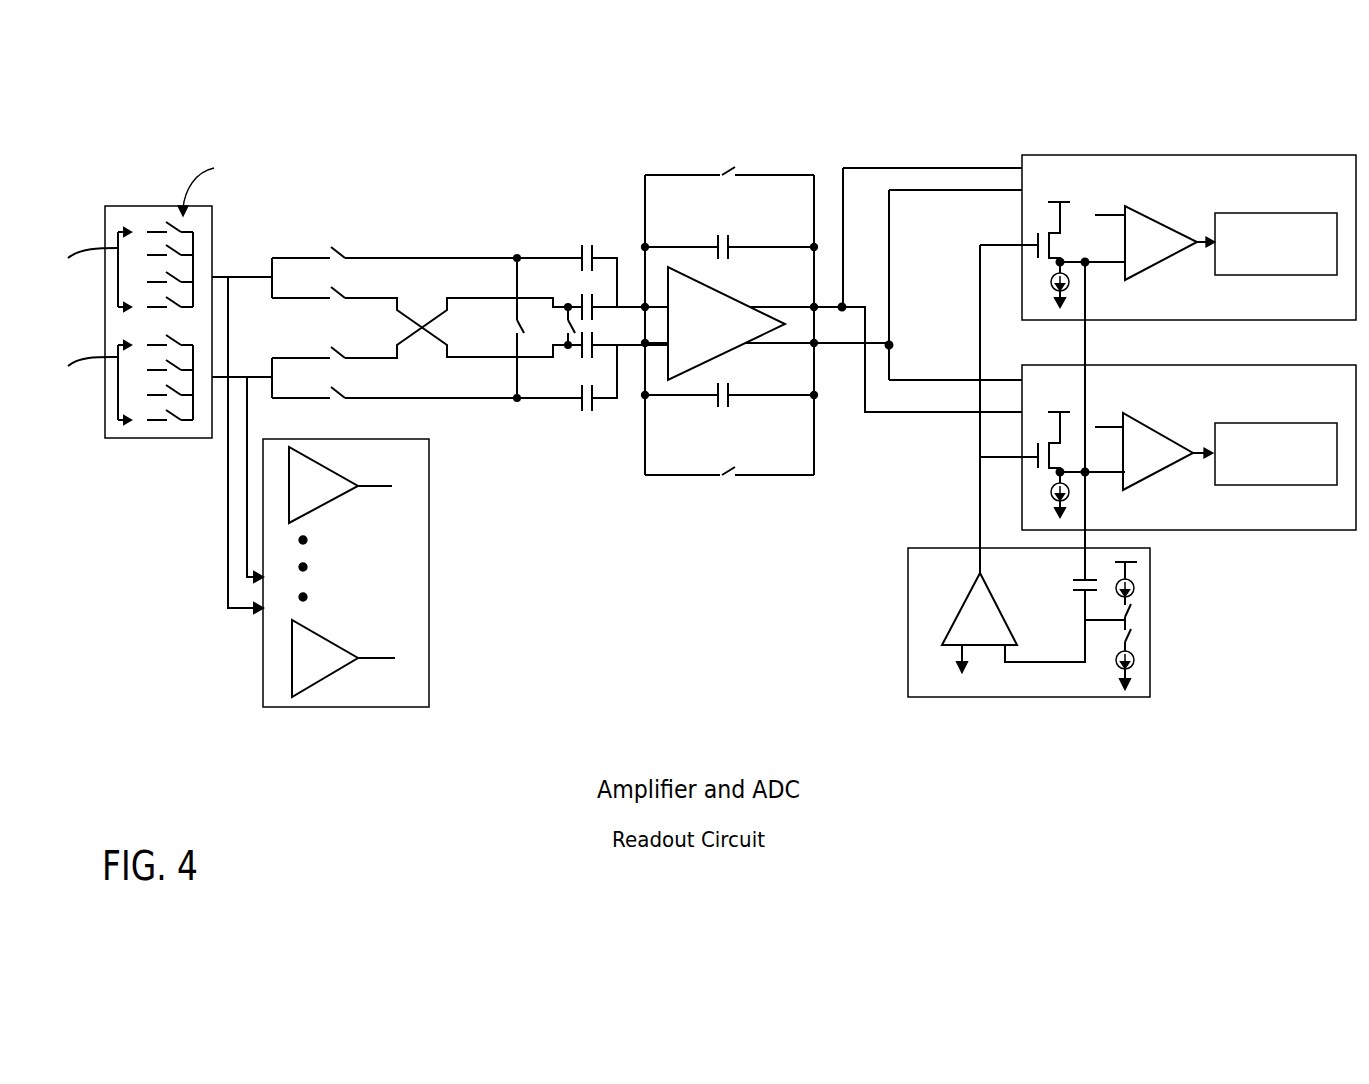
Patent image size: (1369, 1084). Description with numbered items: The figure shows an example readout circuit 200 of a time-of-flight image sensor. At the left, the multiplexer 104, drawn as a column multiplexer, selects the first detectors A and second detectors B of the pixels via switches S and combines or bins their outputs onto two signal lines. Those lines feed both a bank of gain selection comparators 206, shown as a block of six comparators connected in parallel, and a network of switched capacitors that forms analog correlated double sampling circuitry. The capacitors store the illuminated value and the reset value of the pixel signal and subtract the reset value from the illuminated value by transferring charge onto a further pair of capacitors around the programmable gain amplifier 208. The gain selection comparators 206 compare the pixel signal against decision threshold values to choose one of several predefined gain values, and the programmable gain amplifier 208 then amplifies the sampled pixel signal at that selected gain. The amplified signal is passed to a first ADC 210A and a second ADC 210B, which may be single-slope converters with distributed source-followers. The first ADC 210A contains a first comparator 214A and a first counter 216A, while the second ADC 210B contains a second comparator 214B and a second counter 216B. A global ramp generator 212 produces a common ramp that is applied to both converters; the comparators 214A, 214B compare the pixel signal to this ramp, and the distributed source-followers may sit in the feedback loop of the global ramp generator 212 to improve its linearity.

The readout circuit 200 is at (124, 151).
The multiplexer 104 is at (208, 440).
The gain selection comparators 206 is at (426, 707).
The programmable gain amplifier 208 is at (668, 360).
The first ADC 210A is at (1088, 155).
The second ADC 210B is at (1248, 530).
The global ramp generator 212 is at (1127, 697).
The first comparator 214A is at (1137, 279).
The second comparator 214B is at (1153, 489).
The first counter 216A is at (1272, 213).
The second counter 216B is at (1272, 423).